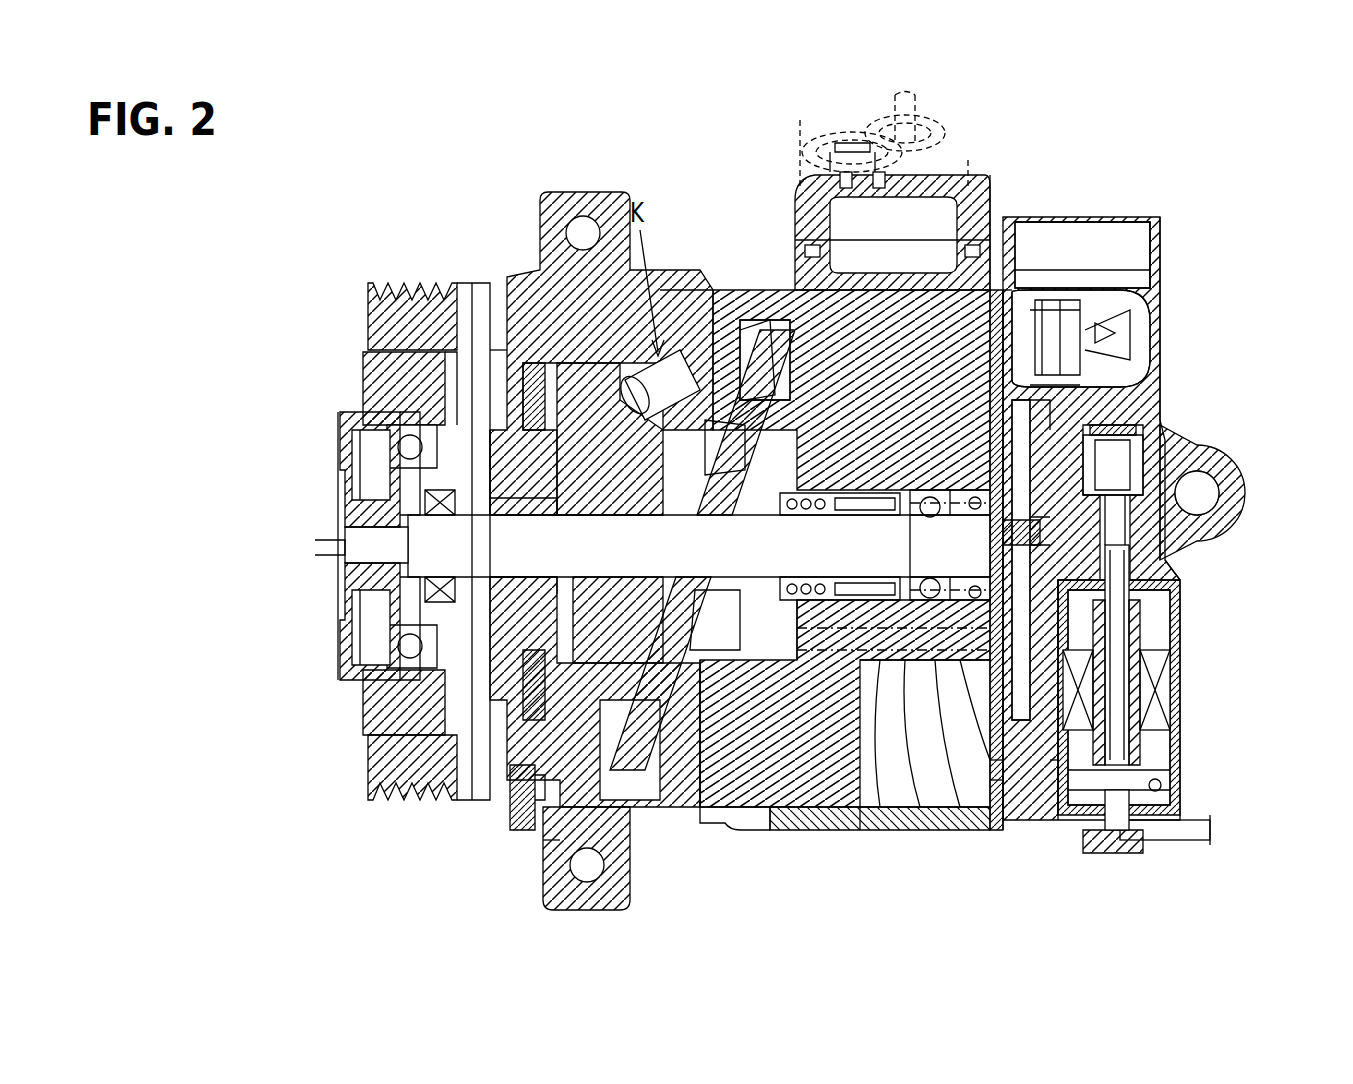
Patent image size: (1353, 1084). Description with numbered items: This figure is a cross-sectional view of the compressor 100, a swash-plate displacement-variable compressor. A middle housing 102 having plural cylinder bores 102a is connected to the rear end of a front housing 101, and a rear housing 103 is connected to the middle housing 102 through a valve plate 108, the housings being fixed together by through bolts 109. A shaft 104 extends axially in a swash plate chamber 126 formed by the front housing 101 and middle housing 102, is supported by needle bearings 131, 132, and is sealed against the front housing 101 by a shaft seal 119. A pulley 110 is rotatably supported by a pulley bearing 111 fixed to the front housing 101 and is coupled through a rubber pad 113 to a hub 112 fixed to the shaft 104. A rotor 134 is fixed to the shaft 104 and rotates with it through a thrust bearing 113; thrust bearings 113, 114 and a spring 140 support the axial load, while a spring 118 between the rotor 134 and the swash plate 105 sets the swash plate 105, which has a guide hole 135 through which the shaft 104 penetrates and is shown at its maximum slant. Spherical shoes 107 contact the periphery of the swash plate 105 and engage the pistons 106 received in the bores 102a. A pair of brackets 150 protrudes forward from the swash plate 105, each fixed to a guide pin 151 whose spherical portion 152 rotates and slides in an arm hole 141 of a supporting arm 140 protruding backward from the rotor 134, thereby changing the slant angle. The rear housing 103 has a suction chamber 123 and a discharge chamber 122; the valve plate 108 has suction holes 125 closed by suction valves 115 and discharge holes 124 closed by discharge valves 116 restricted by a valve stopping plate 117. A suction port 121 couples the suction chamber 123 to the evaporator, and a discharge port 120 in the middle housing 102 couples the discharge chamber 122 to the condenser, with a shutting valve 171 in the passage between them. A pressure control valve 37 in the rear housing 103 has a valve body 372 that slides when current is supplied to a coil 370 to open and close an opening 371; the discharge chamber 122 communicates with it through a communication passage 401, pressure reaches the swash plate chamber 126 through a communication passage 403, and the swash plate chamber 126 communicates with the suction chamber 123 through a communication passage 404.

The compressor 100 is at (733, 250).
The front housing 101 is at (758, 300).
The middle housing 102 is at (960, 290).
The cylinder bores 102a is at (895, 810).
The rear housing 103 is at (1150, 397).
The shaft 104 is at (365, 545).
The swash plate 105 is at (700, 330).
The pistons 106 is at (795, 190).
The shoes 107 is at (718, 345).
The valve plate 108 is at (1020, 280).
The through bolts 109 is at (515, 790).
The pulley 110 is at (370, 317).
The pulley bearing 111 is at (355, 410).
The hub 112 is at (350, 465).
The rubber pad / thrust bearing 113 is at (375, 360).
The thrust bearing 114 is at (825, 800).
The suction valve 115 is at (872, 800).
The discharge valve 116 is at (1060, 300).
The valve stopping plate 117 is at (1115, 330).
The spring 118 is at (543, 850).
The shaft seal 119 is at (380, 590).
The discharge port 120 is at (838, 130).
The suction port 121 is at (1095, 245).
The discharge chamber 122 is at (1150, 380).
The suction chamber 123 is at (1052, 780).
The discharge holes 124 is at (990, 240).
The suction holes 125 is at (940, 790).
The swash plate chamber 126 is at (560, 345).
The needle bearing 131 is at (380, 640).
The needle bearing 132 is at (770, 800).
The rotor 134 is at (437, 330).
The guide hole 135 is at (688, 380).
The supporting arms / spring 140 is at (460, 315).
The arm hole 141 is at (490, 340).
The brackets 150 is at (655, 340).
The guide pin 151 is at (520, 330).
The spherical portion 152 is at (610, 330).
The shutting valve 171 is at (1150, 235).
The pressure control valve 37 is at (1173, 598).
The coil 370 is at (1173, 630).
The opening 371 is at (1150, 512).
The valve body 372 is at (1157, 540).
The communication passage 401 is at (1160, 472).
The communication passage 403 is at (750, 740).
The communication passage 404 is at (805, 760).